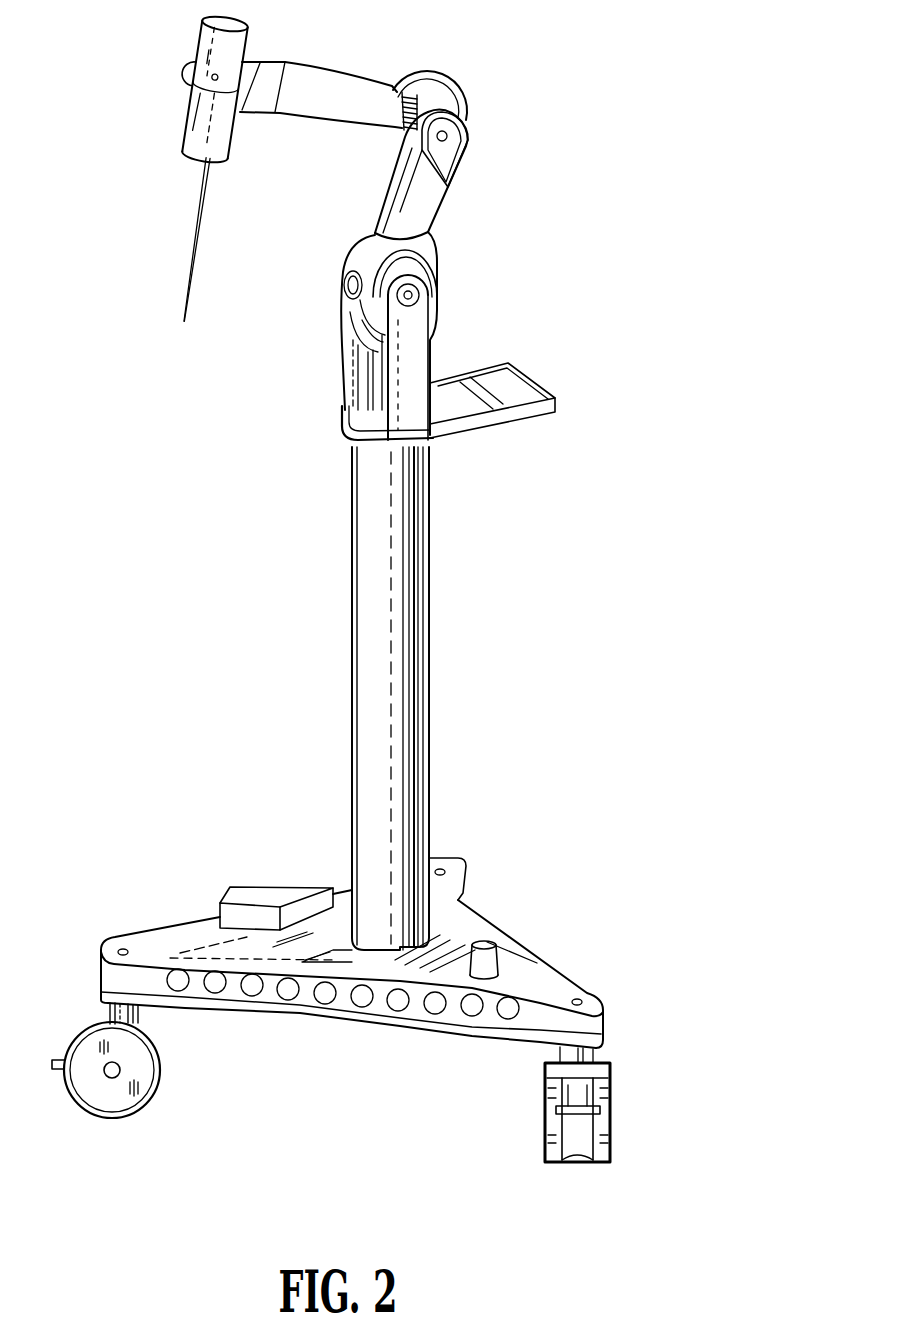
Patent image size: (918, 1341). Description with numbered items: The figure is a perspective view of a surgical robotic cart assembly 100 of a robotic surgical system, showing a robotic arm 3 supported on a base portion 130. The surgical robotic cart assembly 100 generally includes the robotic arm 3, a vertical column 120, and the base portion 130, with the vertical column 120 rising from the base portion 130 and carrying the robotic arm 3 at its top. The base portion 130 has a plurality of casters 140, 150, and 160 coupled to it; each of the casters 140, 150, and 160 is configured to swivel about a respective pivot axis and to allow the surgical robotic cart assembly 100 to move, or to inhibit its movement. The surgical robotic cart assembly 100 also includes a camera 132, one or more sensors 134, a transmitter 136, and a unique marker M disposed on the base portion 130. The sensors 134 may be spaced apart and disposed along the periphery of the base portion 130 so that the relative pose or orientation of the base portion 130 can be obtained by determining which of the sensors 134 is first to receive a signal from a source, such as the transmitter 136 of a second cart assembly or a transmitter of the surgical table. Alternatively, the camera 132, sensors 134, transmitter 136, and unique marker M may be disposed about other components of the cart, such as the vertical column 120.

The robotic arm 3 is at (427, 211).
The surgical robotic cart assembly 100 is at (527, 320).
The vertical column 120 is at (407, 492).
The base portion 130 is at (513, 957).
The camera 132 is at (266, 898).
The sensor 134 is at (347, 823).
The transmitter 136 is at (483, 943).
The caster 140 is at (612, 1172).
The caster 150 is at (137, 1120).
The caster 160 is at (527, 862).
The unique marker M is at (337, 948).